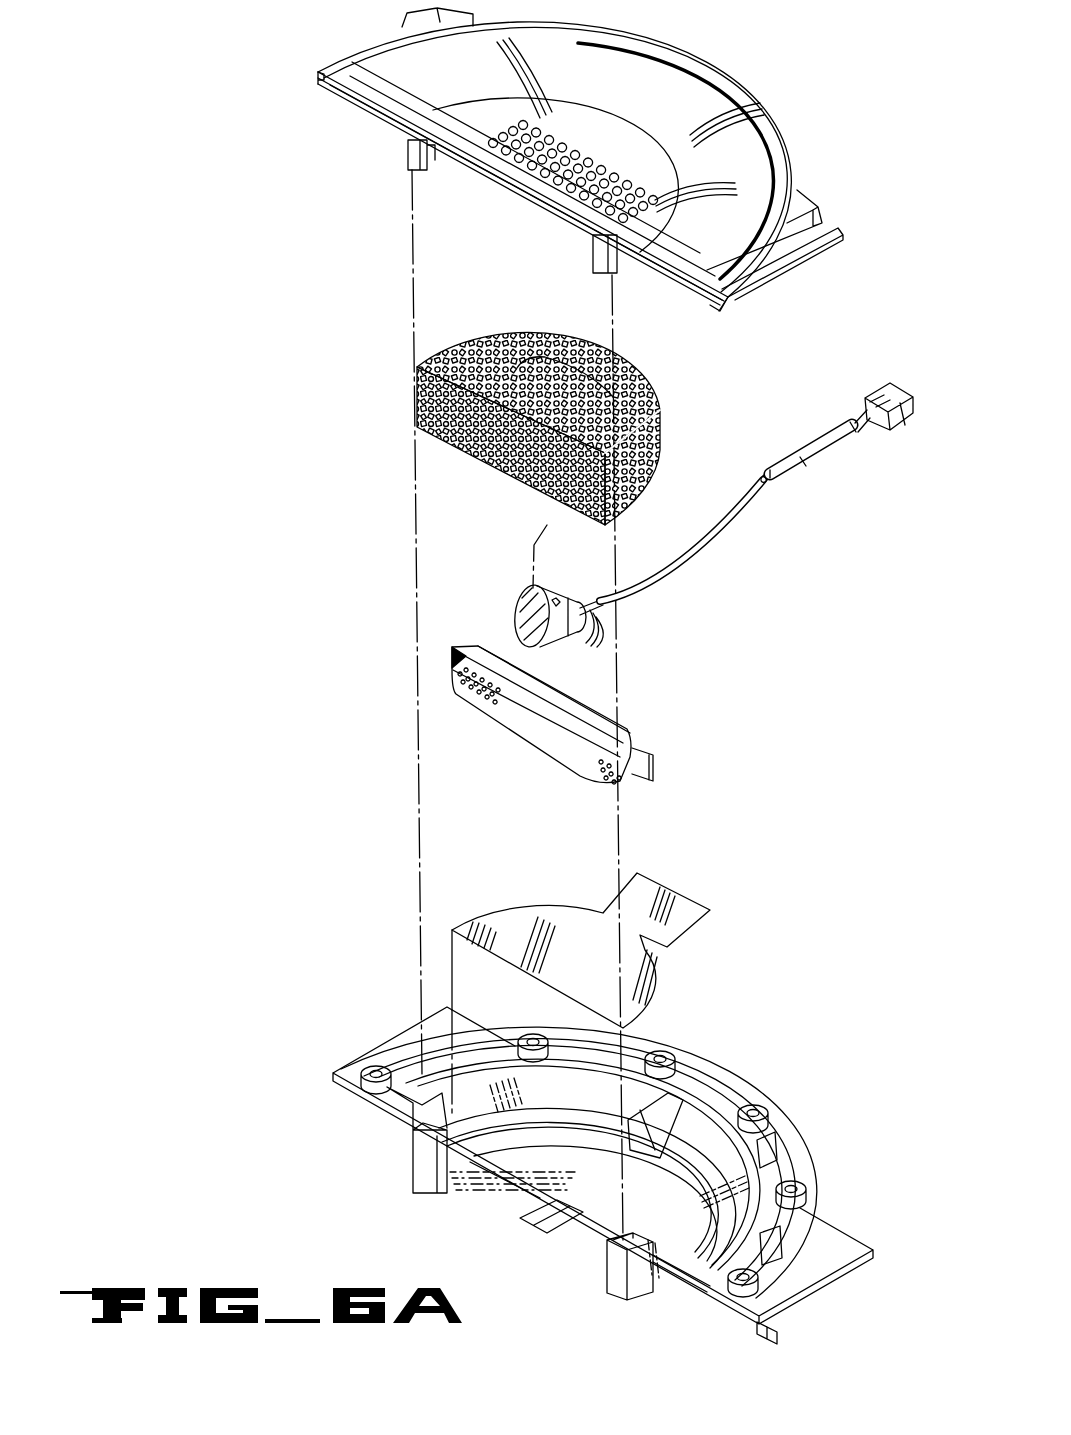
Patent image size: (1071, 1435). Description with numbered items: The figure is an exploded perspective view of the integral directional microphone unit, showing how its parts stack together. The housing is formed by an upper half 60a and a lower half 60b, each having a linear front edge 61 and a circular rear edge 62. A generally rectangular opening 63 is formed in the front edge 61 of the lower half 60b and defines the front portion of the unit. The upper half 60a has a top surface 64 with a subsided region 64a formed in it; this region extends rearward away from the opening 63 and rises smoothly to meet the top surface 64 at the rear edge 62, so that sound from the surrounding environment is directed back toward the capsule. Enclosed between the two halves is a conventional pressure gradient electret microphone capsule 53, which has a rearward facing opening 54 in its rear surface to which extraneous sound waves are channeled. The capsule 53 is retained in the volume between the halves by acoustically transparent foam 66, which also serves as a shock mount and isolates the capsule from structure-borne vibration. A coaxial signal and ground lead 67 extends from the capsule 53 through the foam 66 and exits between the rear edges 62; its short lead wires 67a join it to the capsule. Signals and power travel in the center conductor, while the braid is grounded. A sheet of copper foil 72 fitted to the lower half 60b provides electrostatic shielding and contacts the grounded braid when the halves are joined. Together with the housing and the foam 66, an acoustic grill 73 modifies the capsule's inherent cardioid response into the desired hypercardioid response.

The upper half 60a is at (347, 22).
The lower half 60b is at (427, 1224).
The linear front edge 61 is at (373, 103).
The circular rear edge 62 is at (582, 22).
The rectangular opening 63 is at (512, 1203).
The top surface 64 is at (693, 62).
The subsided region 64a is at (739, 146).
The acoustically transparent foam 66 is at (565, 335).
The coaxial signal and ground lead 67 is at (713, 532).
The lead wires 67a is at (598, 632).
The pressure gradient electret microphone capsule 53 is at (515, 606).
The rearward facing opening 54 is at (563, 596).
The copper foil 72 is at (610, 965).
The acoustic grill 73 is at (537, 728).